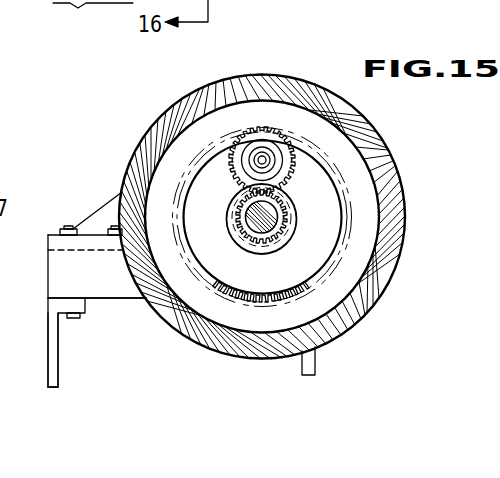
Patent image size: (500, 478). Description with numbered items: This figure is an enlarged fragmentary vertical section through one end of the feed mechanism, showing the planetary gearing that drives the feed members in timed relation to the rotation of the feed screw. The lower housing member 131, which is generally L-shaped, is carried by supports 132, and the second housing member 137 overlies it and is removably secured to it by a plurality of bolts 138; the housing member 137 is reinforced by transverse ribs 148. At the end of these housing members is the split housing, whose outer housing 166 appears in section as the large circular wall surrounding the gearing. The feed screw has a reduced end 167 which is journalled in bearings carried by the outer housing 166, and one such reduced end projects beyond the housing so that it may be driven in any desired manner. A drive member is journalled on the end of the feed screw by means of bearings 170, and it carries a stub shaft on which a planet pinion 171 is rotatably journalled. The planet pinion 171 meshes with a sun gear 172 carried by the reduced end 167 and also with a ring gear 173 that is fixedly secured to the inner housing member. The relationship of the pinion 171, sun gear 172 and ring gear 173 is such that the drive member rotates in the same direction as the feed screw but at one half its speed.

The outer housing 166 is at (393, 190).
The ring gear 173 is at (293, 128).
The planet pinion 171 is at (287, 170).
The bearings 170 is at (261, 162).
The sun gear 172 is at (236, 213).
The reduced end 167 is at (263, 228).
The second housing member 137 is at (42, 243).
The lower housing member 131 is at (114, 292).
The supports 132 is at (54, 357).
The bolts 138 is at (68, 227).
The transverse ribs 148 is at (103, 207).